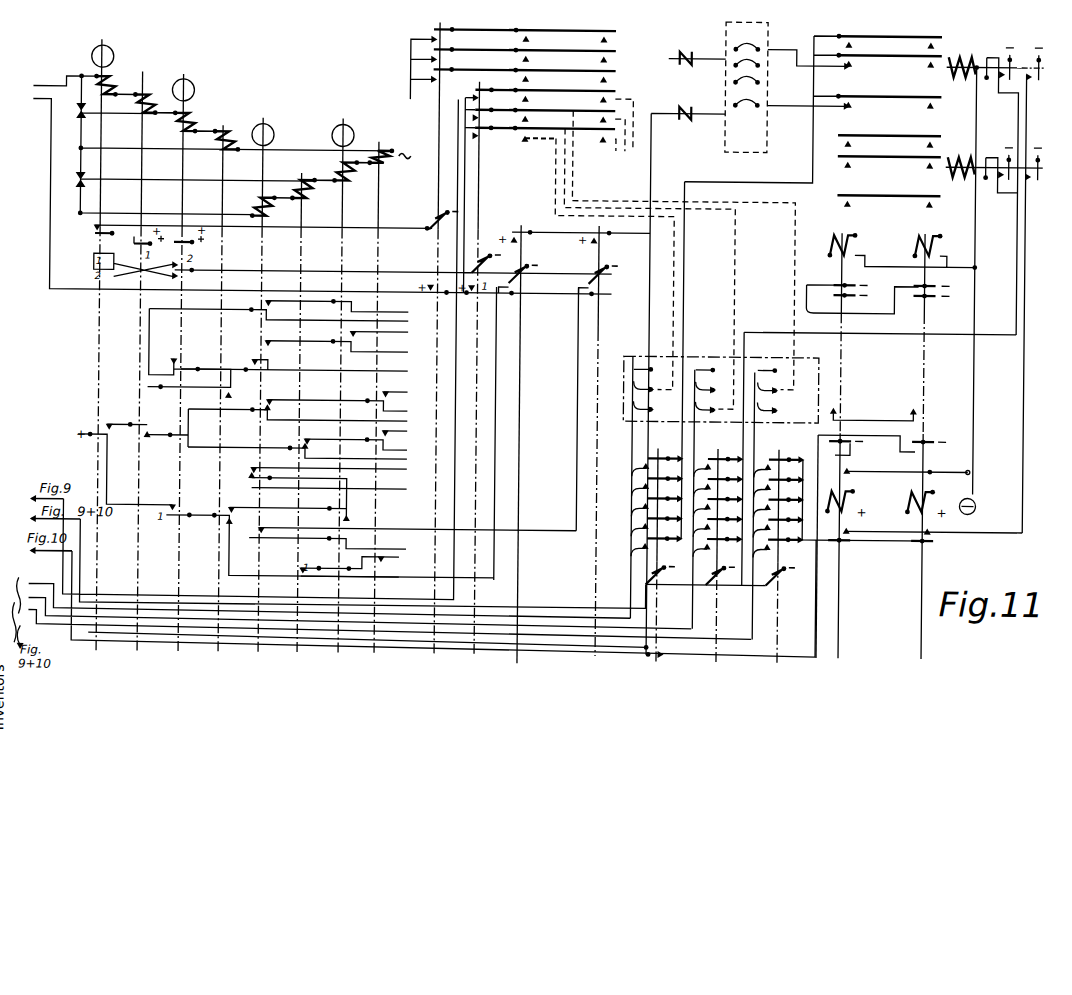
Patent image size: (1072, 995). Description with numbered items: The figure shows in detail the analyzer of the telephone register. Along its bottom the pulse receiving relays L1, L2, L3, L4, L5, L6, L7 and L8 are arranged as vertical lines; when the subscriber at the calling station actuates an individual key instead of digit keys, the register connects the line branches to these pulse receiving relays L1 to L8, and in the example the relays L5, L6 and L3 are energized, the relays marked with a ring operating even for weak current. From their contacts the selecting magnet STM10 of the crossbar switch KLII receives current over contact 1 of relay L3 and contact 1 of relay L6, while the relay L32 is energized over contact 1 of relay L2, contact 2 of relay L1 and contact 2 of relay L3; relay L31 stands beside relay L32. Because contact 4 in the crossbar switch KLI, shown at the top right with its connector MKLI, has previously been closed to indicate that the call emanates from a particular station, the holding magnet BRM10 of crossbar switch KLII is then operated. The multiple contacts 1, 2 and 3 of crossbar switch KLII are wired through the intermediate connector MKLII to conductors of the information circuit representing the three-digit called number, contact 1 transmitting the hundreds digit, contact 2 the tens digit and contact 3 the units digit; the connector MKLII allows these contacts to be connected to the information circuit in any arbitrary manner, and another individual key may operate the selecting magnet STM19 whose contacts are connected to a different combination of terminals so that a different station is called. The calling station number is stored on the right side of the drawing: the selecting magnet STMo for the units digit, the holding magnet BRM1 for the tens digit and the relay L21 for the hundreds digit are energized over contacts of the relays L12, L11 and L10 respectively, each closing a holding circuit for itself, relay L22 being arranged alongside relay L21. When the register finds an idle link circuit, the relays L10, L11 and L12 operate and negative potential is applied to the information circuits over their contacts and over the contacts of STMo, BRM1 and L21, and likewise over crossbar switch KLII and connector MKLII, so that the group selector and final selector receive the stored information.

The pulse receiving relay L1 is at (93, 360).
The pulse receiving relay L2 is at (133, 376).
The pulse receiving relay L3 is at (174, 378).
The pulse receiving relay L4 is at (213, 403).
The pulse receiving relay L5 is at (253, 400).
The pulse receiving relay L6 is at (293, 428).
The pulse receiving relay L7 is at (334, 400).
The pulse receiving relay L8 is at (370, 413).
The relay L31 is at (433, 353).
The relay L32 is at (475, 383).
The selecting magnet STM10 is at (527, 455).
The selecting magnet STM19 is at (592, 456).
The relay L10 is at (658, 433).
The relay L11 is at (718, 509).
The relay L12 is at (785, 530).
The relay L21 is at (840, 460).
The relay L22 is at (920, 461).
The crossbar switch KLI is at (813, 108).
The crossbar switch KLII is at (513, 73).
The connector MKLI is at (793, 100).
The intermediate connector MKLII is at (687, 261).
The holding magnet BRM10 is at (685, 353).
The holding magnet BRM1 is at (1006, 287).
The selecting magnet STMo is at (880, 282).
The multiple contact 1 is at (517, 139).
The multiple contact 2 is at (491, 120).
The multiple contact 3 is at (491, 102).
The contact 4 is at (848, 109).